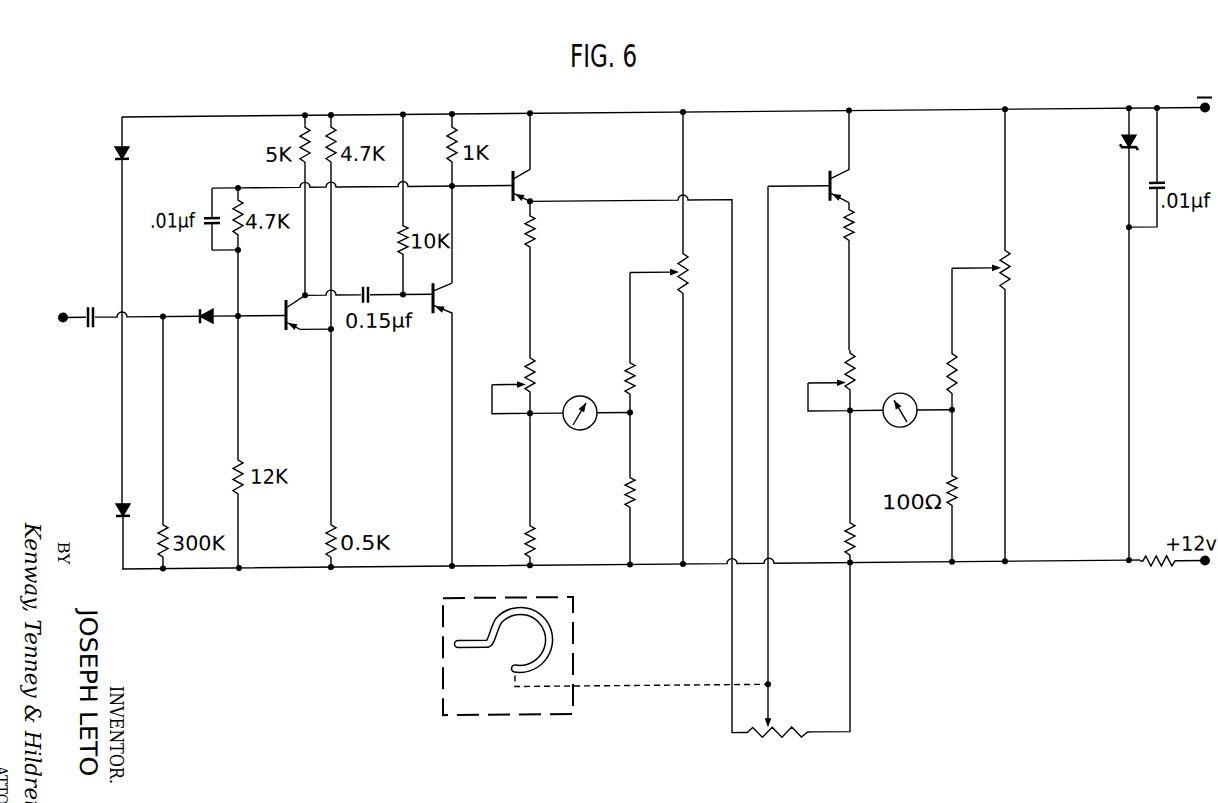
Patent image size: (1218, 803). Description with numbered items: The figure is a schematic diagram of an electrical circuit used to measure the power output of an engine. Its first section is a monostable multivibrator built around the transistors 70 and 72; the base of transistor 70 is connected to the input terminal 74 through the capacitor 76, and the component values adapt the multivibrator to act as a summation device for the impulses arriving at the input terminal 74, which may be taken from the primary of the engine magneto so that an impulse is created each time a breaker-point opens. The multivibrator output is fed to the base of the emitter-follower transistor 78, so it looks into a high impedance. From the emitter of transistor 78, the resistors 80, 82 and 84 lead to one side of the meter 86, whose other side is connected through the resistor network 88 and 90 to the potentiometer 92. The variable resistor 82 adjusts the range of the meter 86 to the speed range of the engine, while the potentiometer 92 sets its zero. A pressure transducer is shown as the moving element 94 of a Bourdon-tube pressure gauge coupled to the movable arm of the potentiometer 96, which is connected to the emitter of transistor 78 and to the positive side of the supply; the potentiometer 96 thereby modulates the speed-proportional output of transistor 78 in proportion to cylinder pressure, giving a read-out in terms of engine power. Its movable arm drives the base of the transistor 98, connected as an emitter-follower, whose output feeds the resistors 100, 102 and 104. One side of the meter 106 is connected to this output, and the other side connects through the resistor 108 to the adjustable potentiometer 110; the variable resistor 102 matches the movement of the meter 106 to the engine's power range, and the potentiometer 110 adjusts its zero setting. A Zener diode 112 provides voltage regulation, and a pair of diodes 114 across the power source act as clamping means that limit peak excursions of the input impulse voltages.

The transistor 70 is at (288, 313).
The transistor 72 is at (440, 307).
The input terminal 74 is at (63, 326).
The capacitor 76 is at (89, 304).
The emitter-follower transistor 78 is at (521, 191).
The resistor 80 is at (532, 227).
The variable resistor 82 is at (527, 362).
The resistor 84 is at (535, 538).
The meter 86 is at (572, 401).
The resistor 88 is at (636, 372).
The resistor 90 is at (628, 489).
The potentiometer 92 is at (697, 259).
The moving element of Bourdon-tube pressure gauge 94 is at (492, 698).
The potentiometer 96 is at (778, 743).
The transistor 98 is at (842, 185).
The resistor 100 is at (852, 229).
The variable resistor 102 is at (848, 361).
The resistor 104 is at (855, 543).
The meter 106 is at (927, 394).
The resistor 108 is at (965, 365).
The potentiometer 110 is at (1008, 261).
The Zener diode 112 is at (1126, 159).
The diodes 114 is at (116, 157).